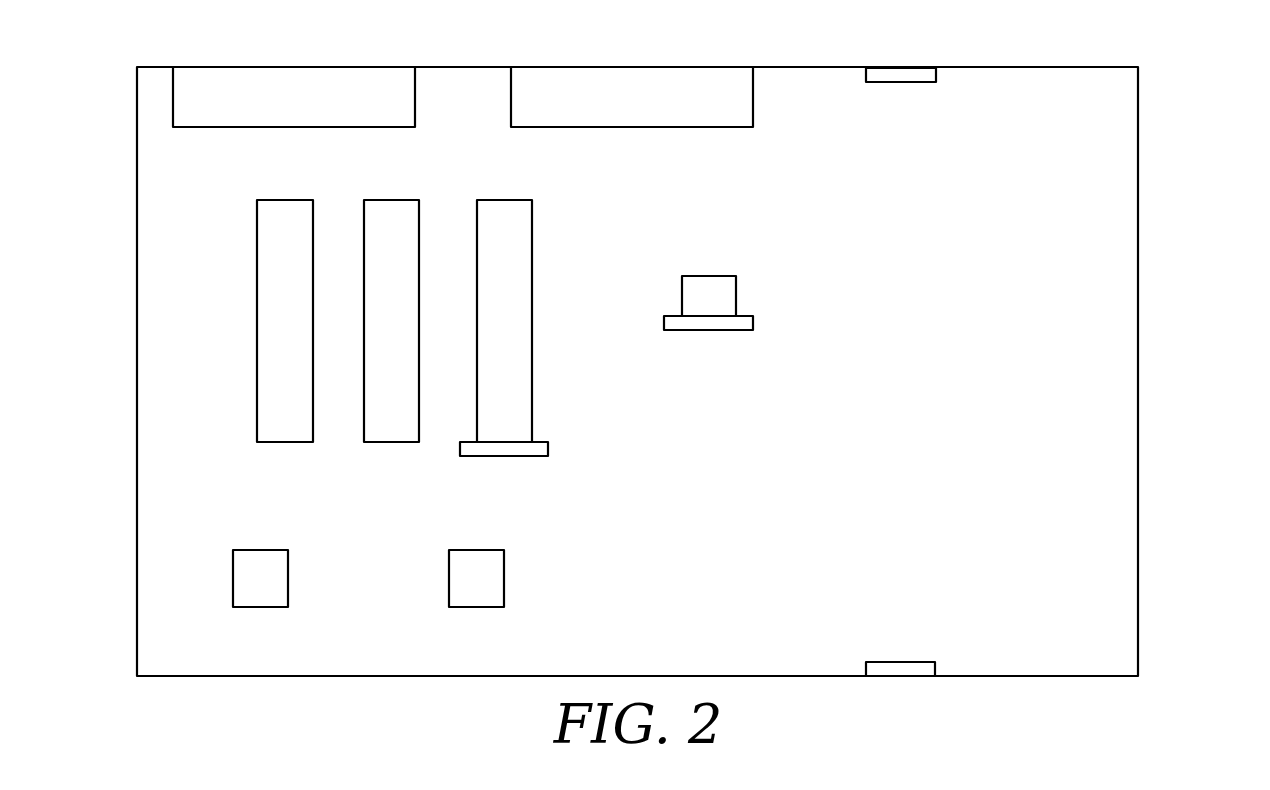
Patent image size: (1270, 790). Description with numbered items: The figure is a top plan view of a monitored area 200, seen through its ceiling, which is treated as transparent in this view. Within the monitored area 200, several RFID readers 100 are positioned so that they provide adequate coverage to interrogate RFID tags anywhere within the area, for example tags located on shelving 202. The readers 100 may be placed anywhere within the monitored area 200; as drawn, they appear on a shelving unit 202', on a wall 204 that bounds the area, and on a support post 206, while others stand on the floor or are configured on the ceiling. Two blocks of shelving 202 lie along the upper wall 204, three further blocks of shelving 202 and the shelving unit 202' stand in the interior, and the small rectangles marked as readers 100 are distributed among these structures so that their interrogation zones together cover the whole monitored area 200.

The RFID reader 100 is at (901, 84).
The monitored area 200 is at (1183, 138).
The shelving 202 is at (463, 256).
The shelving unit 202' is at (546, 321).
The wall 204 is at (1118, 67).
The support post 206 is at (736, 295).